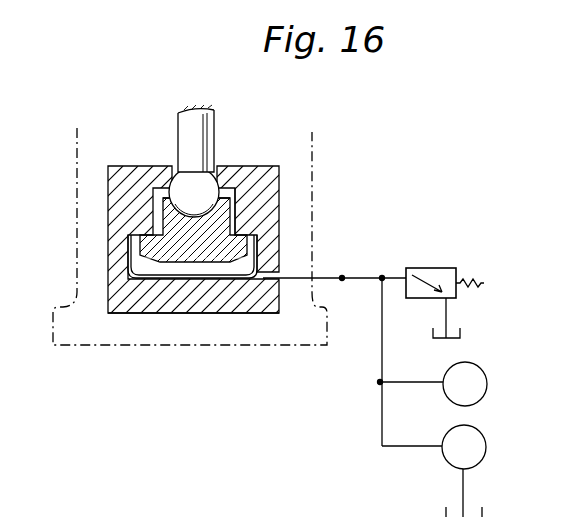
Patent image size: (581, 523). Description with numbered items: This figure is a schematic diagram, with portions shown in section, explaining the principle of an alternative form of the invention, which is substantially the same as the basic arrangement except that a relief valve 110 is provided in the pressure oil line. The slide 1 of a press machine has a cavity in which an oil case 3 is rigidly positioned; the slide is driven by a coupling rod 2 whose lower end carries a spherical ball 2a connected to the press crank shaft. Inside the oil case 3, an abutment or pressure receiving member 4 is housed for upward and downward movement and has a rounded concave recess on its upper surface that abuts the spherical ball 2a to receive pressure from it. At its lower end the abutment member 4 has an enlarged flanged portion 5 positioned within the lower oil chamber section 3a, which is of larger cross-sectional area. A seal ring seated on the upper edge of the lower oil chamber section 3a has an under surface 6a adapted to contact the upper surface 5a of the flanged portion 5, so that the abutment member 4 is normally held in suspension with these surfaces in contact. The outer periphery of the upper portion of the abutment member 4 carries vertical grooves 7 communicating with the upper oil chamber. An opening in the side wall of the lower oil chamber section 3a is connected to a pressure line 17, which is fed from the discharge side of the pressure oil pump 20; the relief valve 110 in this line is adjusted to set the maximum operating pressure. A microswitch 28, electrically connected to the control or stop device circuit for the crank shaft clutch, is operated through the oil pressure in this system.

The slide 1 is at (79, 349).
The coupling rod 2 is at (208, 132).
The spherical ball 2a is at (184, 187).
The oil case 3 is at (263, 173).
The lower oil chamber section 3a is at (218, 270).
The abutment member 4 is at (203, 257).
The flanged portion 5 is at (240, 247).
The upper surface of flanged portion 5a is at (238, 232).
The under surface of seal ring 6a is at (133, 238).
The vertical grooves 7 is at (232, 213).
The pressure line 17 is at (342, 280).
The relief valve 110 is at (432, 268).
The microswitch 28 is at (482, 366).
The pressure oil pump 20 is at (486, 440).